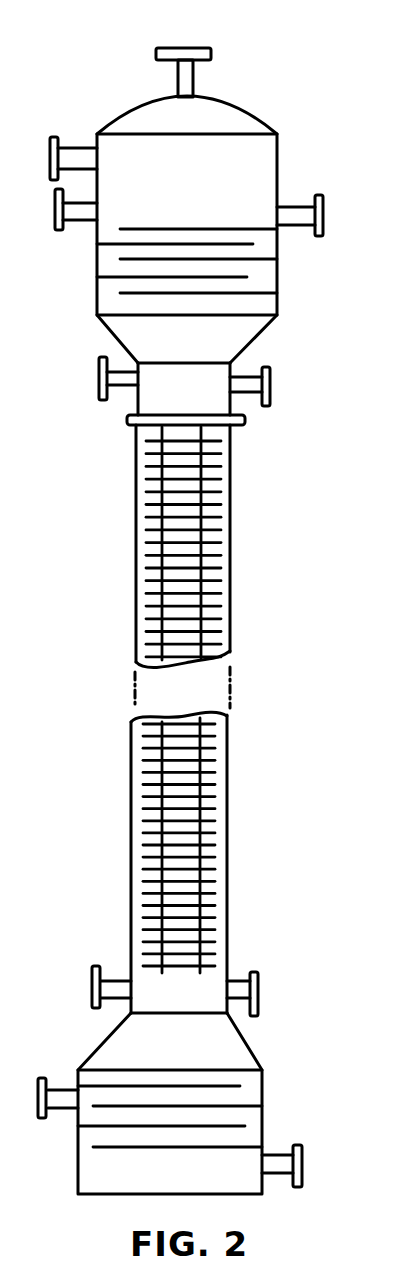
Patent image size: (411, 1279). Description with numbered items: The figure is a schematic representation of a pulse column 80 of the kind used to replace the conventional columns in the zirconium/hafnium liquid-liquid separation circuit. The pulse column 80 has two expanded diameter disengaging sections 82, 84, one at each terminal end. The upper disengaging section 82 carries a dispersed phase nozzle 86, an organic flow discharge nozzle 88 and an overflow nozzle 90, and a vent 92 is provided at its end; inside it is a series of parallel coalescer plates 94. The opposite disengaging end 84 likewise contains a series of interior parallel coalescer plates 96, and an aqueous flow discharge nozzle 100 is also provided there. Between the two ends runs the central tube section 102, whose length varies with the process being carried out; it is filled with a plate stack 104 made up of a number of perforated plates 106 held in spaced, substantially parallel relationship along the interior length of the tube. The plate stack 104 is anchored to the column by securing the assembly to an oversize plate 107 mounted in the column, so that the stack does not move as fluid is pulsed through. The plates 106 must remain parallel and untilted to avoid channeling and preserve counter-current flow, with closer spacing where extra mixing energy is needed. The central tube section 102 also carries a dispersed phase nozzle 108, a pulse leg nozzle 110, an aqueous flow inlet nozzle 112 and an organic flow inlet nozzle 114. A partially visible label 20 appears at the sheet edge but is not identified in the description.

The pulse column 80 is at (238, 692).
The disengaging section 82 is at (241, 110).
The disengaging section 84 is at (247, 1196).
The dispersed phase nozzle 86 is at (320, 195).
The organic flow discharge nozzle 88 is at (60, 231).
The overflow nozzle 90 is at (46, 137).
The vent 92 is at (196, 54).
The coalescer plates 94 is at (255, 246).
The coalescer plates 96 is at (238, 1146).
The aqueous flow discharge nozzle 100 is at (298, 1145).
The central tube section 102 is at (135, 481).
The plate stack 104 is at (220, 834).
The plates 106 is at (212, 480).
The oversize plate 107 is at (127, 419).
The dispersed phase nozzle 108 is at (266, 366).
The pulse leg nozzle 110 is at (96, 966).
The aqueous flow inlet nozzle 112 is at (100, 356).
The organic flow inlet nozzle 114 is at (256, 971).
The line 20 is at (13, 477).